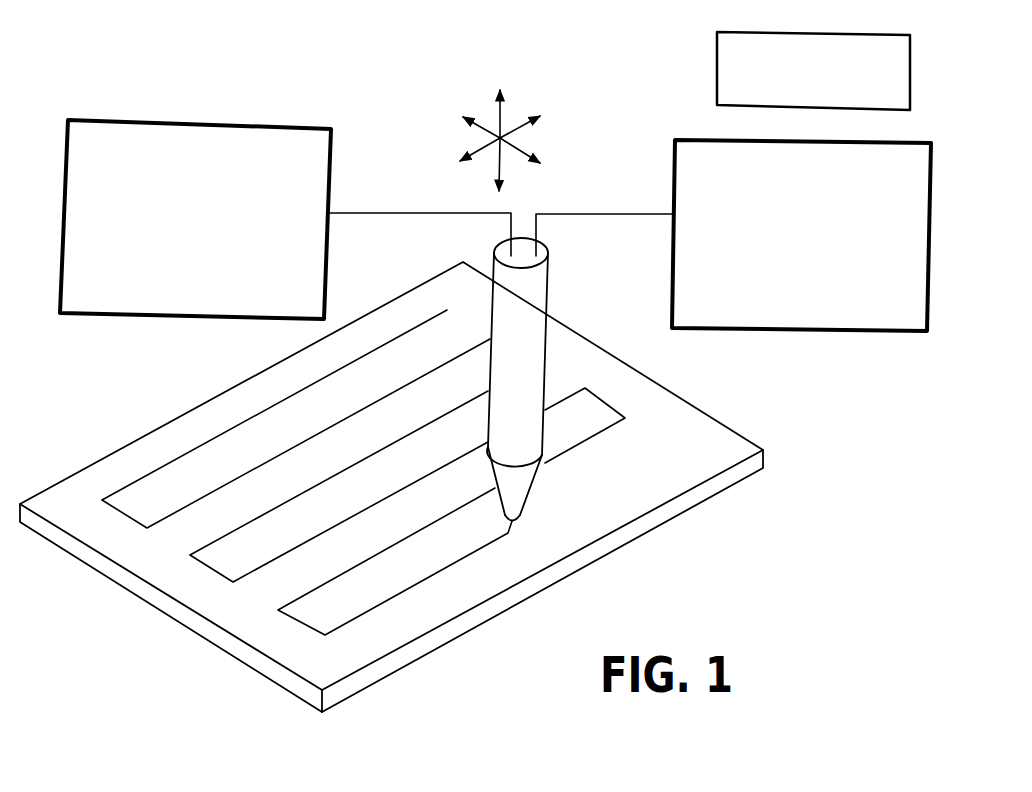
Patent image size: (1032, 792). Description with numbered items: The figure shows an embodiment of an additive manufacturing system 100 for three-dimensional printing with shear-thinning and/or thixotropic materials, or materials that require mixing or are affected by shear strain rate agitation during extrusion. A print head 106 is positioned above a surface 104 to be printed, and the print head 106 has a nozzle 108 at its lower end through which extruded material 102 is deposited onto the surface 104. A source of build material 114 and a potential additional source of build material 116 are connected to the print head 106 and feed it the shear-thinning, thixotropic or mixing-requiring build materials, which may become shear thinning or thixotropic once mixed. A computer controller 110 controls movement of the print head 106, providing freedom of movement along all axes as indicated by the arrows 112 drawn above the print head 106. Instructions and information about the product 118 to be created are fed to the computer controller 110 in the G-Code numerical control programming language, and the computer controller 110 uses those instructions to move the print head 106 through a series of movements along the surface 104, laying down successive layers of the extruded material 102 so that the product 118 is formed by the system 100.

The system 100 is at (357, 83).
The extruded material 102 is at (517, 519).
The surface 104 is at (703, 463).
The print head 106 is at (531, 305).
The nozzle 108 is at (532, 492).
The computer controller 110 is at (717, 70).
The arrows 112 is at (502, 113).
The source of build material 114 is at (168, 182).
The additional sources of build material 116 is at (828, 202).
The product 118 is at (235, 425).